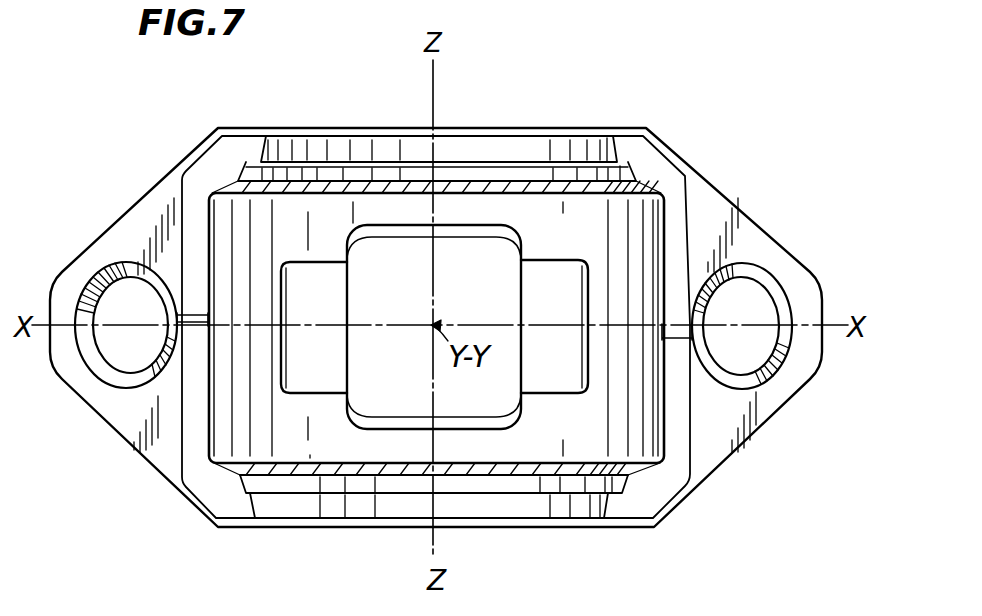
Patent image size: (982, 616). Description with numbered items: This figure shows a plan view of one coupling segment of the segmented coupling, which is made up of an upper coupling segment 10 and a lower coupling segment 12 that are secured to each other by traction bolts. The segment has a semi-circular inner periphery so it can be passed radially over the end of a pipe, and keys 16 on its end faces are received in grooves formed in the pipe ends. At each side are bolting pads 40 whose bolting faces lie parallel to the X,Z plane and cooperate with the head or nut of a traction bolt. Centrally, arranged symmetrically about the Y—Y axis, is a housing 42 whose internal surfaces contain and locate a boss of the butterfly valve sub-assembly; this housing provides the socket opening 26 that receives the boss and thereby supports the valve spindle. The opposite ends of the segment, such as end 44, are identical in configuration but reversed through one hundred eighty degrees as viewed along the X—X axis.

The upper coupling segment 10 is at (537, 134).
The lower coupling segment 12 is at (434, 305).
The keys 16 is at (463, 146).
The socket openings 26 is at (348, 281).
The bolting pads 40 is at (136, 218).
The housing 42 is at (530, 287).
The end of coupling segment 44 is at (679, 190).